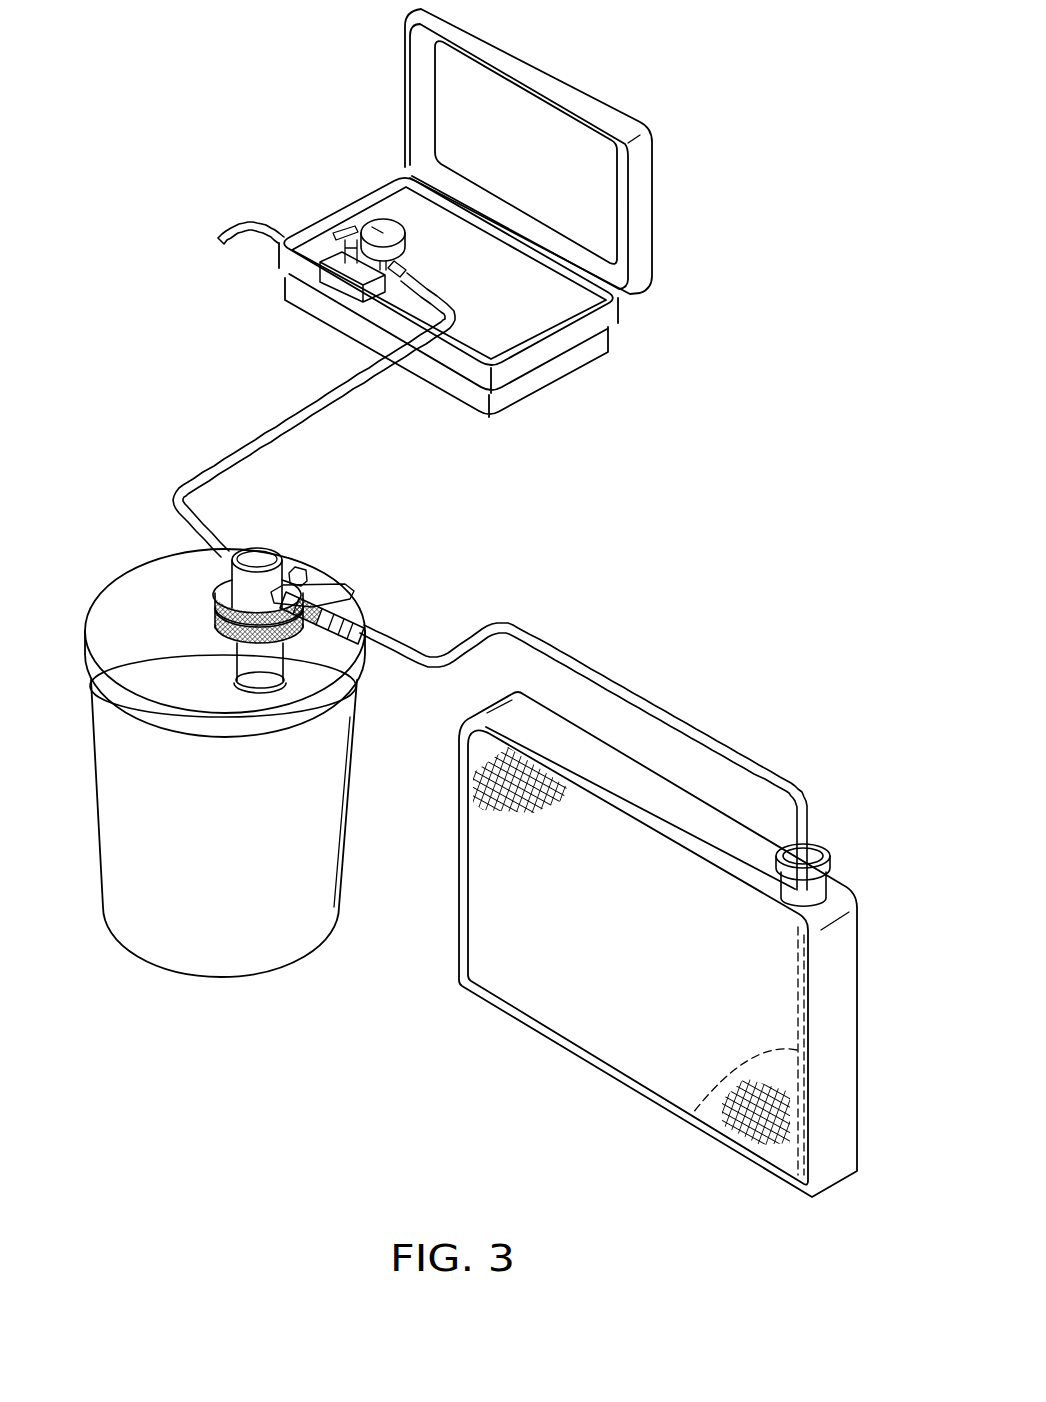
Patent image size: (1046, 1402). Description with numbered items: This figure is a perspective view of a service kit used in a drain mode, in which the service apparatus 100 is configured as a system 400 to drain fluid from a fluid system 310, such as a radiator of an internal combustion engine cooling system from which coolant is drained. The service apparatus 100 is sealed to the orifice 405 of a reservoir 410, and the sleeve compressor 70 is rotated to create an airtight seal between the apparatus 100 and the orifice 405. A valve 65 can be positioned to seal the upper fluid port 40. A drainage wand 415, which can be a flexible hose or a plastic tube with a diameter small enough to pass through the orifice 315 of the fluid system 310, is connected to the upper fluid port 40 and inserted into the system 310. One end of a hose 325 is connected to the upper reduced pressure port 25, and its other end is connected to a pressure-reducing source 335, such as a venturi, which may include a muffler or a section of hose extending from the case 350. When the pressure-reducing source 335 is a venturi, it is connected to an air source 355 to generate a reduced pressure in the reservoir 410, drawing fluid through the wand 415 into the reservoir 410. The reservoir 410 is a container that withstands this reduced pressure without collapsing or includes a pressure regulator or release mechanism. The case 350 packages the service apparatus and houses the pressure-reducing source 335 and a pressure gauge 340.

The system 400 is at (748, 86).
The case 350 is at (612, 323).
The pressure gauge 340 is at (376, 219).
The pressure-reducing source 335 is at (338, 249).
The air source 355 is at (217, 240).
The hose 325 is at (291, 421).
The reservoir 410 is at (123, 595).
The orifice 405 is at (135, 683).
The upper reduced pressure port 25 is at (249, 553).
The service apparatus 100 is at (268, 553).
The sleeve compressor 70 is at (304, 643).
The upper fluid port 40 is at (305, 562).
The valve 65 is at (318, 566).
The drainage wand 415 is at (550, 638).
The fluid system 310 is at (833, 1013).
The orifice 315 is at (832, 852).